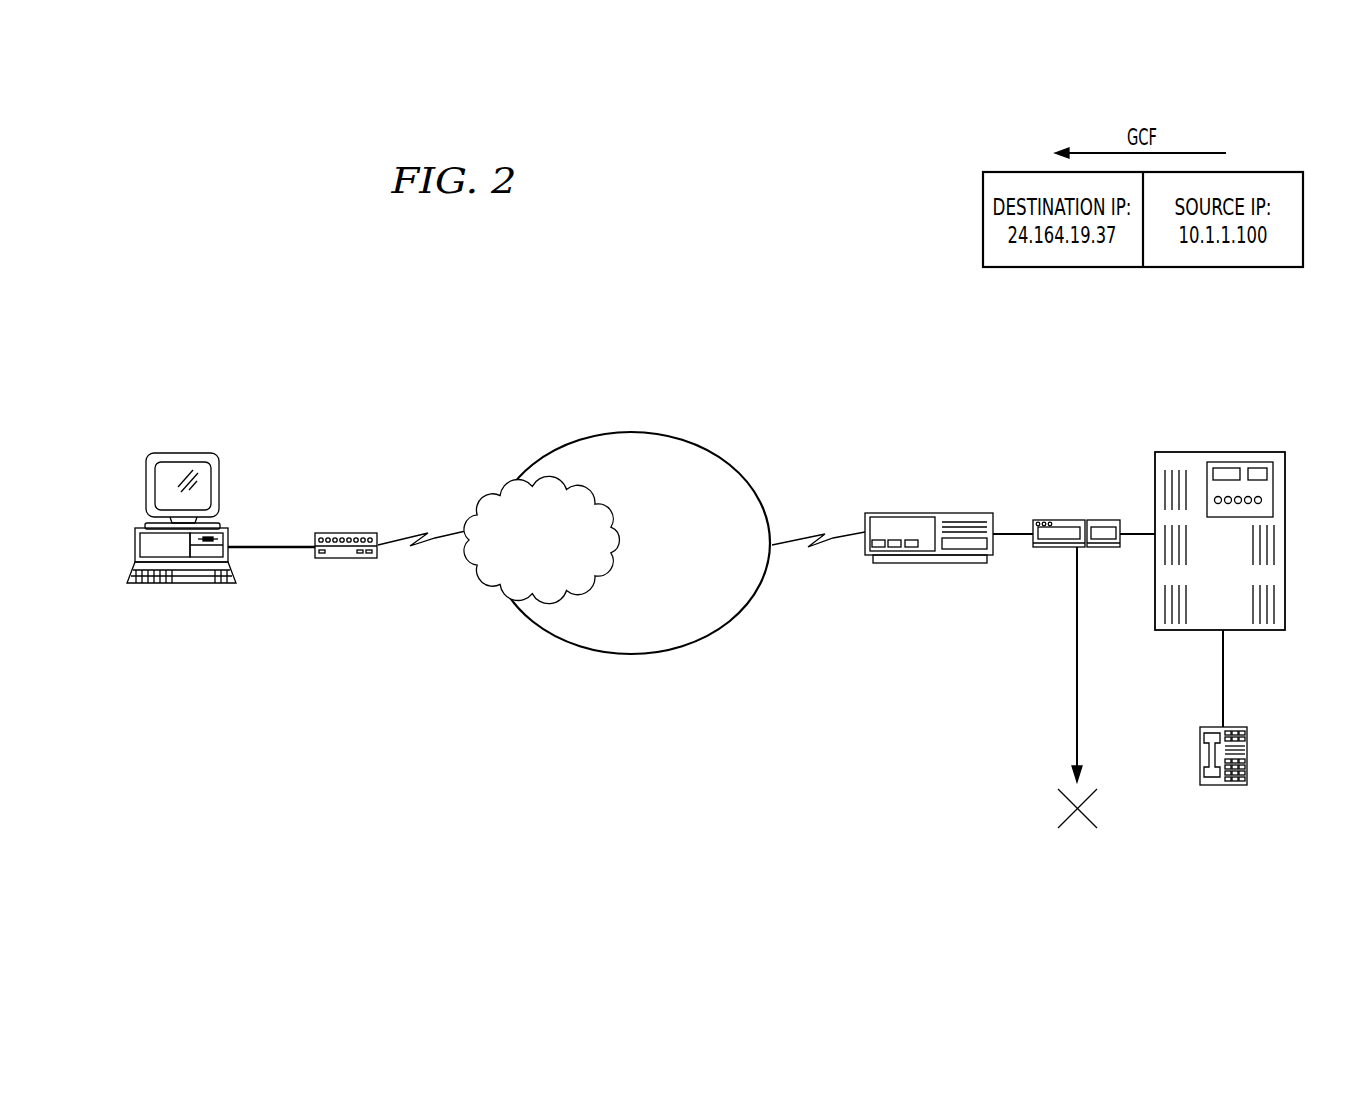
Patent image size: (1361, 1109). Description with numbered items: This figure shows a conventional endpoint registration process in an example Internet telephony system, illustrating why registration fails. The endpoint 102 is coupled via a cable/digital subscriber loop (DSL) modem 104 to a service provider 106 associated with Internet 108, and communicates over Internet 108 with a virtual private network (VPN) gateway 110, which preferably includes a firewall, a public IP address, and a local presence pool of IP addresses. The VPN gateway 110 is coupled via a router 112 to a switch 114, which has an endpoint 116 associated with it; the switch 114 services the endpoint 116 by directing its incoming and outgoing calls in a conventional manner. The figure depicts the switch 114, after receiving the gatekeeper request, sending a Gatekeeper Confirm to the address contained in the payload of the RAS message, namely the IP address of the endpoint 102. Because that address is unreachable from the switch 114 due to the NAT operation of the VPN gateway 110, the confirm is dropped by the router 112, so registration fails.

The endpoint 102 is at (146, 479).
The cable/digital subscriber loop (DSL) modem 104 is at (330, 533).
The service provider 106 is at (481, 588).
The Internet 108 is at (631, 432).
The virtual private network (VPN) gateway 110 is at (931, 513).
The router 112 is at (1077, 520).
The switch 114 is at (1286, 468).
The endpoint 116 is at (1248, 761).